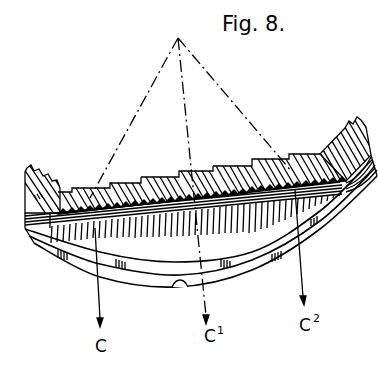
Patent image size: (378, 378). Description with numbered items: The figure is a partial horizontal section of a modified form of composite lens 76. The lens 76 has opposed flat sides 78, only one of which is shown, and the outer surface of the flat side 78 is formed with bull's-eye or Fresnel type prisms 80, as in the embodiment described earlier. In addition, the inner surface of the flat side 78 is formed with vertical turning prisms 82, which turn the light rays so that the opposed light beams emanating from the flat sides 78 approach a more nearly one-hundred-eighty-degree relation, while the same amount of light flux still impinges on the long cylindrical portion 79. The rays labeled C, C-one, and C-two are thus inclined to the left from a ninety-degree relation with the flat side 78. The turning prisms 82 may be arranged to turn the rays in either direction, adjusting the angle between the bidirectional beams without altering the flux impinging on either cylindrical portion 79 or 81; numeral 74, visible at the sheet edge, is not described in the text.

The segment 74 is at (7, 29).
The lens 76 is at (91, 161).
The flat side 78 is at (165, 163).
The long cylindrical portion 79 is at (28, 171).
The bull's-eye or Fresnel type prisms 80 is at (163, 208).
The cylindrical portion 81 is at (347, 129).
The vertical turning prisms 82 is at (212, 170).